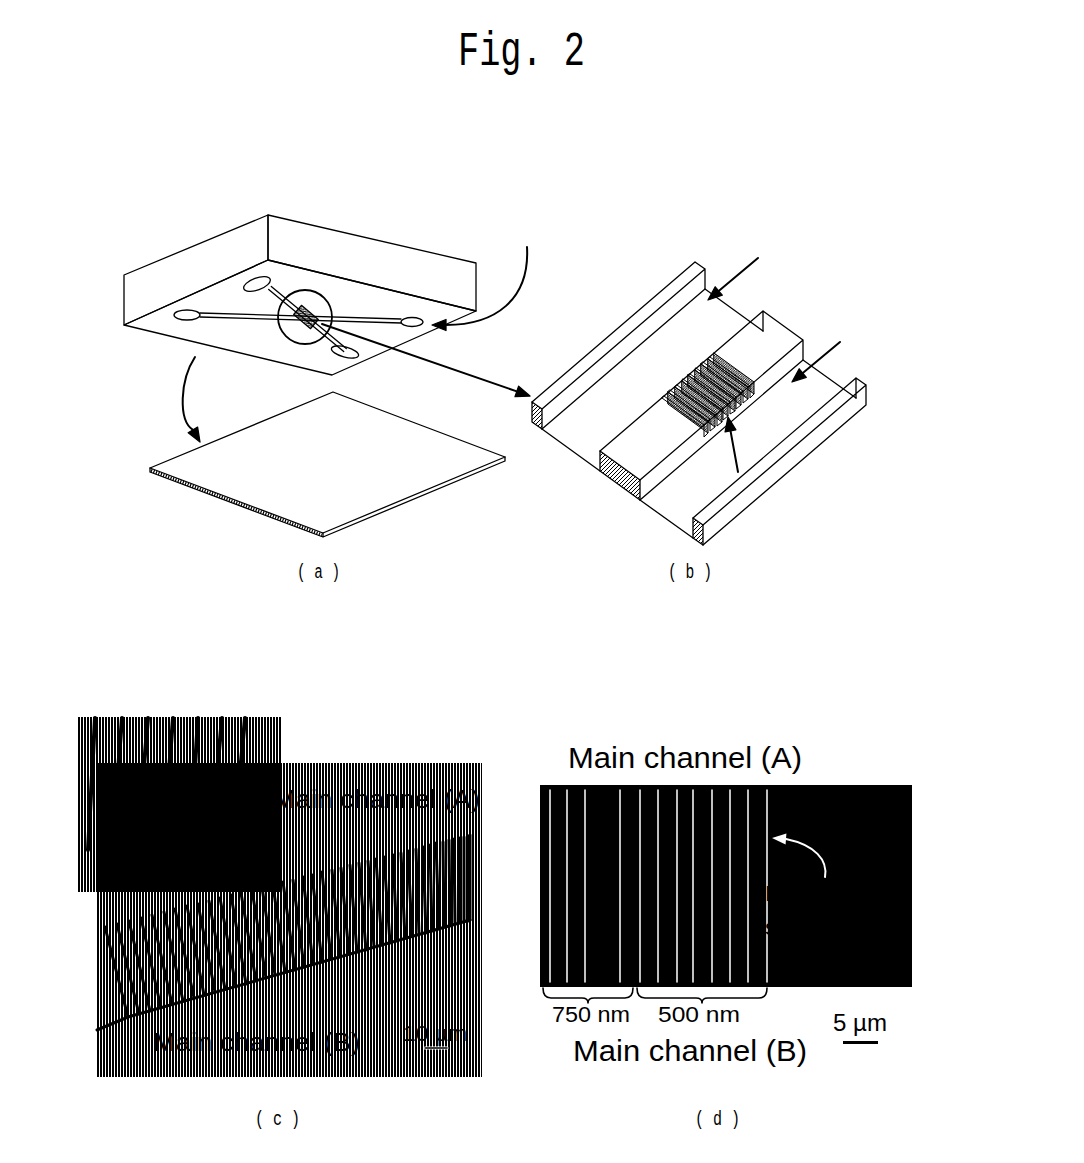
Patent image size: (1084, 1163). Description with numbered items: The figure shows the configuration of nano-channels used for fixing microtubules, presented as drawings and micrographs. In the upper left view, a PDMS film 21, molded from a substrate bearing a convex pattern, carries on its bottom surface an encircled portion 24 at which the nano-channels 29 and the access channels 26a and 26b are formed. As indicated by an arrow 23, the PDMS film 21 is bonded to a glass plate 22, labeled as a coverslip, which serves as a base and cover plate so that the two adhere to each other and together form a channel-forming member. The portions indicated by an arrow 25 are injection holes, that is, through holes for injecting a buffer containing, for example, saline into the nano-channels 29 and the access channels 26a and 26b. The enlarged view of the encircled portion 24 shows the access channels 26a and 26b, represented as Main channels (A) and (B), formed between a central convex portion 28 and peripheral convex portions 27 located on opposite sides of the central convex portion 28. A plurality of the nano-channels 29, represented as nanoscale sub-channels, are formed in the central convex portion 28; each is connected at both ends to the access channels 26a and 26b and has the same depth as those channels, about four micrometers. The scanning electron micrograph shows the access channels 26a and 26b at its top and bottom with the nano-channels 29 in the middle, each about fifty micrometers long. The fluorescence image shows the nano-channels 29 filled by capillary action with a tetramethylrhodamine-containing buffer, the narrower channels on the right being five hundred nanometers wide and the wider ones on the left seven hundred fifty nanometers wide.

The PDMS film 21 is at (295, 238).
The glass plate 22 is at (205, 488).
The arrow 23 is at (182, 393).
The encircled portion 24 is at (317, 290).
The arrow 25 is at (528, 290).
The access channel 26a is at (747, 307).
The access channel 26b is at (841, 376).
The peripheral convex portion 27 is at (533, 431).
The central convex portion 28 is at (600, 468).
The nano-channels 29 is at (753, 399).